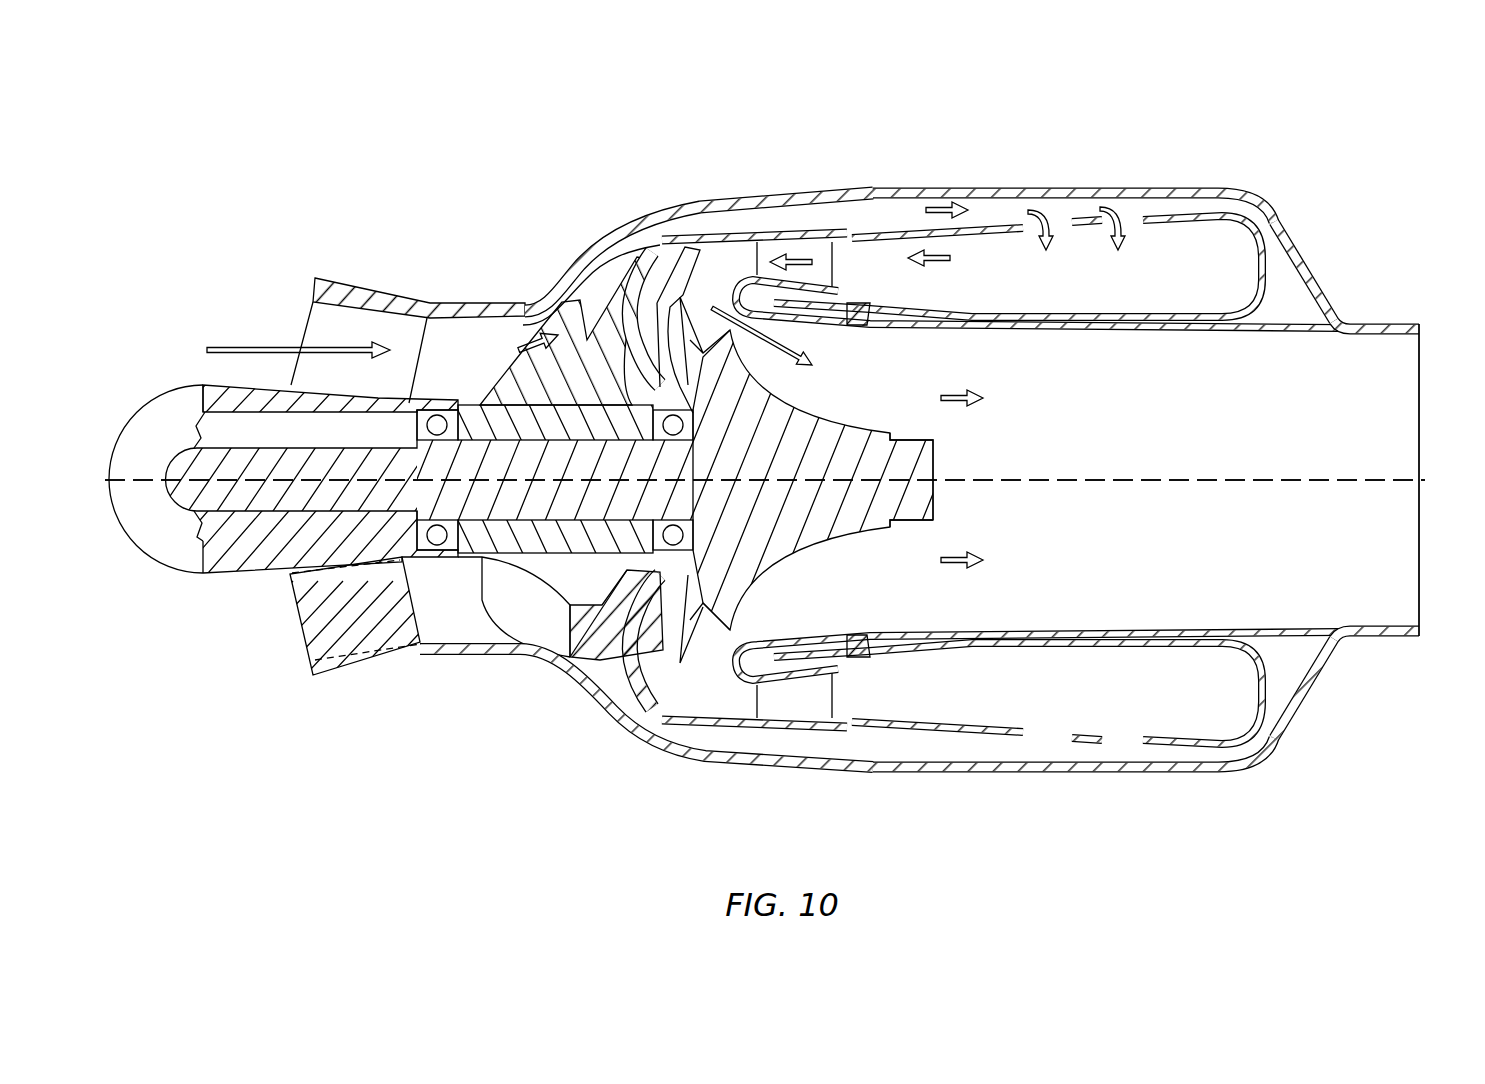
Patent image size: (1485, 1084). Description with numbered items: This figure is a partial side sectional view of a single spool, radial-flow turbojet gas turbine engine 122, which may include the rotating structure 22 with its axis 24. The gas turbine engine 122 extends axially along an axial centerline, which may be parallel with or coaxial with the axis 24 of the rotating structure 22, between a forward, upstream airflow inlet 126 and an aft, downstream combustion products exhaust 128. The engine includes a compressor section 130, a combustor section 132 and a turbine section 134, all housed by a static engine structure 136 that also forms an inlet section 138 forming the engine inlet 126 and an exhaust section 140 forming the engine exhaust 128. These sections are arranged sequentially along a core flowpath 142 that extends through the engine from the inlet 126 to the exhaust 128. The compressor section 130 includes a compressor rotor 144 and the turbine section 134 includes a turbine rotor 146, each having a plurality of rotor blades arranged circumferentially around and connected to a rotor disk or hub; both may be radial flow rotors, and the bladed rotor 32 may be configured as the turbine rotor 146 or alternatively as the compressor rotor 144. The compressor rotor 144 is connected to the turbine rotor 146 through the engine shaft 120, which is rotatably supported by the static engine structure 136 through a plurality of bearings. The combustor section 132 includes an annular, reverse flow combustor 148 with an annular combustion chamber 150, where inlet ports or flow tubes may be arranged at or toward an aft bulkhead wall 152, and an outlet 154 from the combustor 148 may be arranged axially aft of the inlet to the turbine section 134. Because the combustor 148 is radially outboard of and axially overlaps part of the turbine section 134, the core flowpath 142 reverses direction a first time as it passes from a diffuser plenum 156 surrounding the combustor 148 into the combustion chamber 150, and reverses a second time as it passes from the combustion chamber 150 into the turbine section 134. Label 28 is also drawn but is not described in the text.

The rotating structure 22 is at (942, 453).
The axis 24 is at (1325, 486).
The shaft end 28 is at (937, 500).
The bladed rotor 32 is at (813, 412).
The engine shaft 120 is at (282, 513).
The gas turbine engine 122 is at (1381, 156).
The airflow inlet 126 is at (297, 322).
The combustion products exhaust 128 is at (1420, 416).
The compressor section 130 is at (577, 248).
The combustor section 132 is at (1176, 201).
The turbine section 134 is at (703, 288).
The static engine structure 136 is at (820, 186).
The inlet section 138 is at (392, 284).
The exhaust section 140 is at (1367, 312).
The core flowpath 142 is at (425, 375).
The compressor rotor 144 is at (493, 628).
The turbine rotor 146 is at (805, 557).
The combustor 148 is at (1008, 220).
The combustion chamber 150 is at (1029, 298).
The aft bulkhead wall 152 is at (1278, 250).
The outlet 154 is at (770, 250).
The diffuser plenum 156 is at (913, 213).